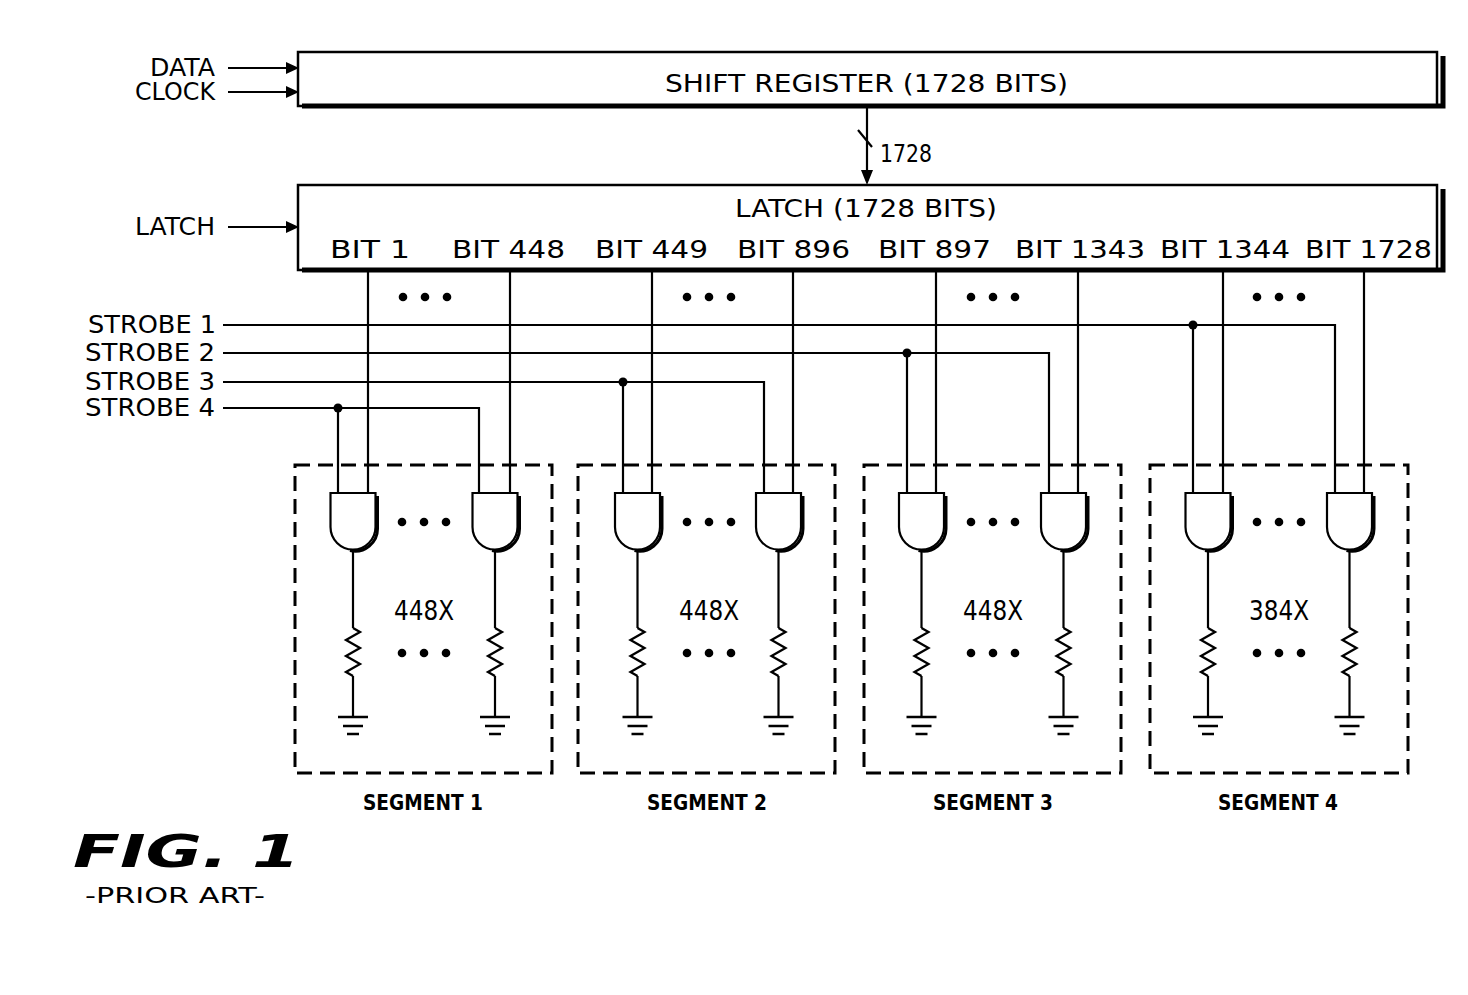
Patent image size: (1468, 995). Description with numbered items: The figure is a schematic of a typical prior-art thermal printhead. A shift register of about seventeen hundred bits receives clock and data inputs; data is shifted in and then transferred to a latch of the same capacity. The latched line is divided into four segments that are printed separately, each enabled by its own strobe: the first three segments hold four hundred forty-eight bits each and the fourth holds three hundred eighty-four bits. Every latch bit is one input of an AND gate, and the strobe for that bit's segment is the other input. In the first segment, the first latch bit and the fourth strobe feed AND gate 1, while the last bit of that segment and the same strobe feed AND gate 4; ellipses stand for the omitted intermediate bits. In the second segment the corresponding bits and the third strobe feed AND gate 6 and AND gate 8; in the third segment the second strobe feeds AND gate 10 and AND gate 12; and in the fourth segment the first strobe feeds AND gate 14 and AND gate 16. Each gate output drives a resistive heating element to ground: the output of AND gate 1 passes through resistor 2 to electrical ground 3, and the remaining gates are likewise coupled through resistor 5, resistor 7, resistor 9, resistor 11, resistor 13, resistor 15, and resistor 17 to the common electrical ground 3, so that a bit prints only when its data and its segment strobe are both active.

The AND gate 1 is at (366, 548).
The resistor 2 is at (345, 652).
The electrical ground 3 is at (1326, 735).
The AND gate 4 is at (482, 548).
The resistor 5 is at (503, 650).
The AND gate 6 is at (650, 548).
The resistor 7 is at (630, 652).
The AND gate 8 is at (766, 548).
The resistor 9 is at (787, 650).
The AND gate 10 is at (934, 548).
The resistor 11 is at (914, 652).
The AND gate 12 is at (1051, 548).
The resistor 13 is at (1072, 650).
The AND gate 14 is at (1221, 548).
The resistor 15 is at (1200, 652).
The AND gate 16 is at (1337, 548).
The resistor 17 is at (1358, 650).